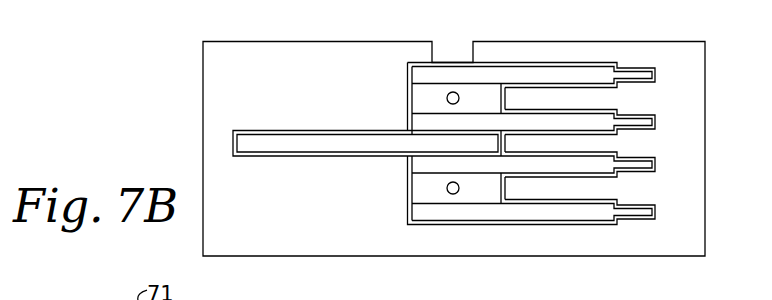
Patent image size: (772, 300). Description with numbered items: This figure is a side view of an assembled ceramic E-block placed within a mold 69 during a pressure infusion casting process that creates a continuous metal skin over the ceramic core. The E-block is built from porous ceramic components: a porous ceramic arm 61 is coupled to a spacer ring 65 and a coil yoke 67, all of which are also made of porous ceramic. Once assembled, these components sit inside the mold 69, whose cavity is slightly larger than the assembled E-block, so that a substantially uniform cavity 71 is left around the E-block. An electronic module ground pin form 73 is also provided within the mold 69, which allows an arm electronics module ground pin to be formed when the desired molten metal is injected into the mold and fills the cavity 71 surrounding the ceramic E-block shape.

The porous ceramic arm 61 is at (552, 215).
The spacer ring 65 is at (422, 191).
The coil yoke 67 is at (288, 143).
The mold 69 is at (694, 270).
The cavity 71 is at (567, 63).
The electronic module ground pin form 73 is at (447, 98).